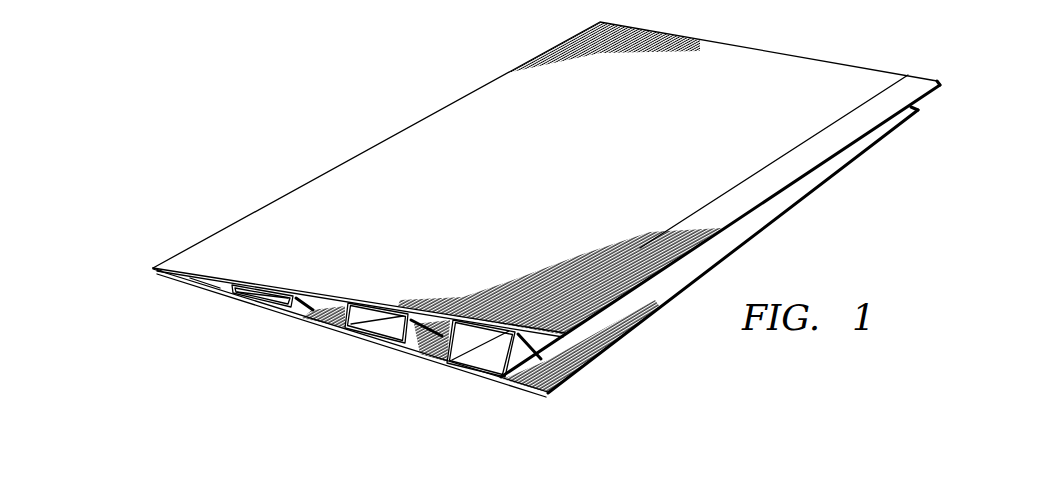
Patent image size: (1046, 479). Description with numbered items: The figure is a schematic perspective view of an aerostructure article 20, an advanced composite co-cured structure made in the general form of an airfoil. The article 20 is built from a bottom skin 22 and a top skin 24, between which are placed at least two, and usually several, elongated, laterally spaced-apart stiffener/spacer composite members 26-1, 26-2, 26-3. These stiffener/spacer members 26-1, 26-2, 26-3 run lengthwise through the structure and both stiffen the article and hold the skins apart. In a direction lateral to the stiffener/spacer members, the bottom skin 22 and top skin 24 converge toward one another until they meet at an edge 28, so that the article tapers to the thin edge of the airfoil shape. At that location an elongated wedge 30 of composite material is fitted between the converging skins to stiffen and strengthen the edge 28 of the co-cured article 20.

The aerostructure article 20 is at (452, 70).
The bottom skin 22 is at (793, 208).
The top skin 24 is at (403, 160).
The stiffener/spacer composite member 26-1 is at (268, 301).
The stiffener/spacer composite member 26-2 is at (376, 330).
The stiffener/spacer composite member 26-3 is at (485, 363).
The edge 28 is at (176, 295).
The elongated wedge 30 is at (205, 285).